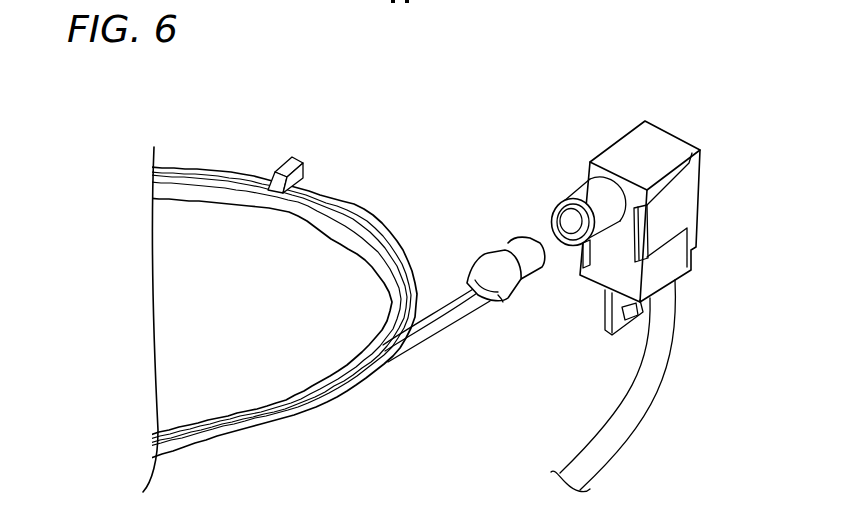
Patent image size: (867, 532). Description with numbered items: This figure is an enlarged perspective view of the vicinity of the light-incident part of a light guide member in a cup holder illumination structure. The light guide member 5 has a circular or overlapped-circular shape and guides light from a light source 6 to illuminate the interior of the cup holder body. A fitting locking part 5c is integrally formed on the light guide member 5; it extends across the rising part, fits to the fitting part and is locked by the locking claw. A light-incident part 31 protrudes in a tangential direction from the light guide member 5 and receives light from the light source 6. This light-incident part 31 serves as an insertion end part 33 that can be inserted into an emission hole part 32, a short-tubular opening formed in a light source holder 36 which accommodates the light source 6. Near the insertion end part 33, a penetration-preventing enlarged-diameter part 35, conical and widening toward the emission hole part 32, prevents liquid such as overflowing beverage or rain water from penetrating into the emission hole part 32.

The light guide member 5 is at (233, 163).
The fitting locking part 5c is at (278, 163).
The light source 6 is at (613, 199).
The light-incident part 31 is at (424, 327).
The emission hole part 32 is at (548, 208).
The insertion end part 33 is at (510, 242).
The penetration-preventing enlarged-diameter part 35 is at (500, 298).
The light source holder 36 is at (658, 148).